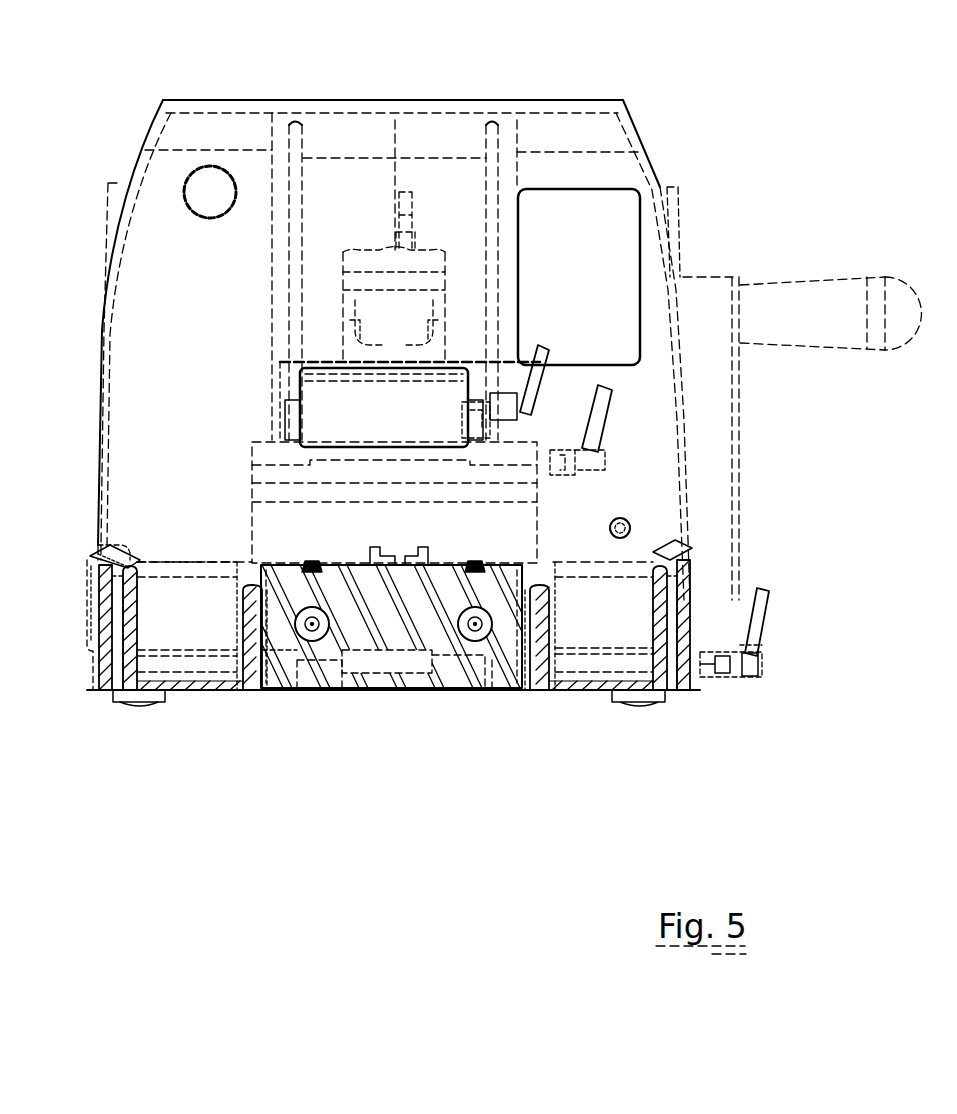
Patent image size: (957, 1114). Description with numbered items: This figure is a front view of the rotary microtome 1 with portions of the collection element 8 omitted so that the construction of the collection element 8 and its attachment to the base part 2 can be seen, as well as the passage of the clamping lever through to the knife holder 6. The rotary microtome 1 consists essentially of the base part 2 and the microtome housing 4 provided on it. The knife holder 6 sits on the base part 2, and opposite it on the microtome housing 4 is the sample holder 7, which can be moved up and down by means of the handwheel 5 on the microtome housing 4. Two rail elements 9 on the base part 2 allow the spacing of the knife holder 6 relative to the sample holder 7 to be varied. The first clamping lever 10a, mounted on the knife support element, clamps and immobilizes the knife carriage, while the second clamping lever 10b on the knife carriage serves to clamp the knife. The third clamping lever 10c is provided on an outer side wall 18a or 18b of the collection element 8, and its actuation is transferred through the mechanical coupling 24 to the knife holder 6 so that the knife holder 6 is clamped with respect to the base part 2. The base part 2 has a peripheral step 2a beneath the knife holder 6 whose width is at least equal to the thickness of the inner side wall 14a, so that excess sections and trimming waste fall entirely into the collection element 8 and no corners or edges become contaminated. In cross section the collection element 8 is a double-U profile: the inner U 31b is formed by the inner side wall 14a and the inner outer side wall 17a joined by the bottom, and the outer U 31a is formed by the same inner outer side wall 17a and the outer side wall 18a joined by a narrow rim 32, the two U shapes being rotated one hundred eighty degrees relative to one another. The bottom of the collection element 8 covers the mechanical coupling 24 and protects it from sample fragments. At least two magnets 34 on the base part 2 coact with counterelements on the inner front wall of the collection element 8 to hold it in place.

The rotary microtome 1 is at (376, 88).
The microtome housing 4 is at (593, 142).
The sample holder 7 is at (383, 290).
The knife holder 6 is at (250, 522).
The second clamping lever 10b is at (548, 368).
The first clamping lever 10a is at (605, 405).
The handwheel 5 is at (718, 418).
The collection element 8 is at (118, 530).
The narrow rim 32 is at (128, 560).
The outer side wall 18a is at (87, 590).
The inner U 31b is at (212, 598).
The inner outer side wall 17a is at (138, 636).
The peripheral step 2a is at (253, 580).
The rail elements 9 is at (312, 561).
The base part 2 is at (298, 680).
The magnets 34 is at (333, 680).
The first inner side wall 14a is at (280, 672).
The outer U 31a is at (118, 700).
The outer side wall 18b is at (700, 610).
The third clamping lever 10c is at (772, 625).
The mechanical coupling 24 is at (706, 672).